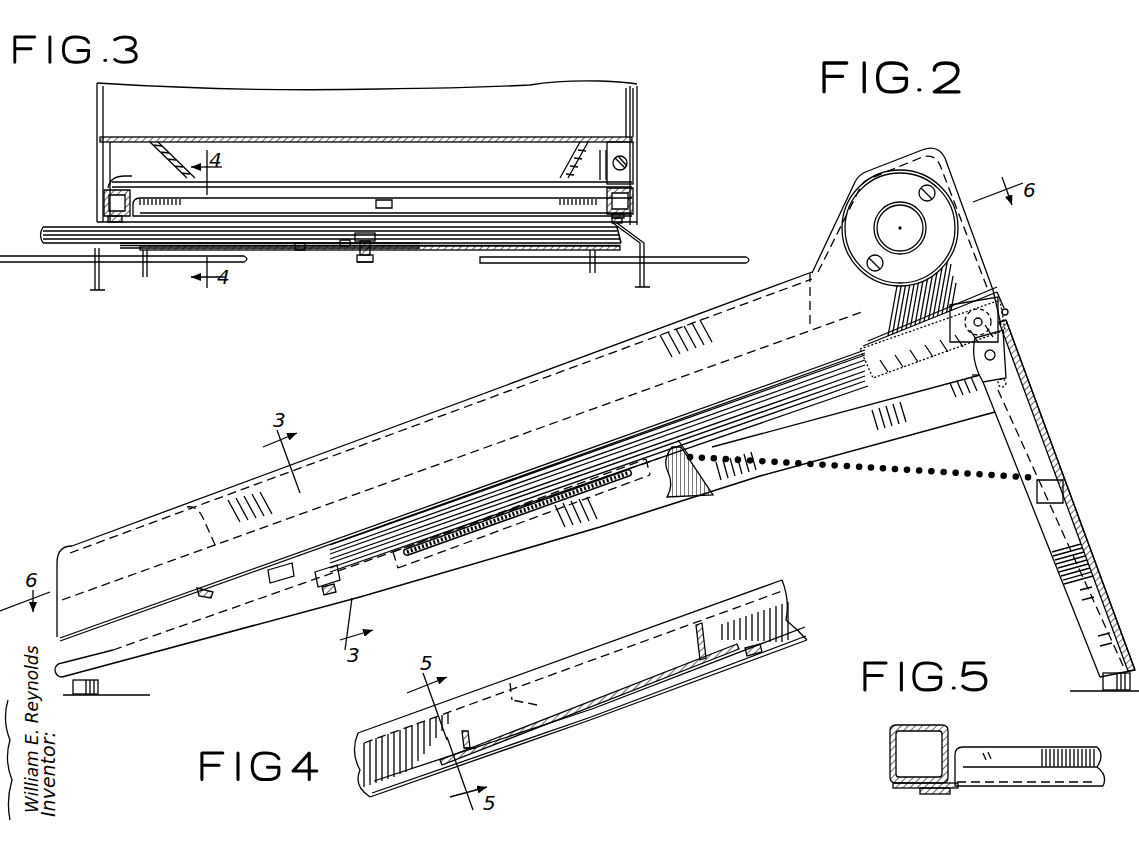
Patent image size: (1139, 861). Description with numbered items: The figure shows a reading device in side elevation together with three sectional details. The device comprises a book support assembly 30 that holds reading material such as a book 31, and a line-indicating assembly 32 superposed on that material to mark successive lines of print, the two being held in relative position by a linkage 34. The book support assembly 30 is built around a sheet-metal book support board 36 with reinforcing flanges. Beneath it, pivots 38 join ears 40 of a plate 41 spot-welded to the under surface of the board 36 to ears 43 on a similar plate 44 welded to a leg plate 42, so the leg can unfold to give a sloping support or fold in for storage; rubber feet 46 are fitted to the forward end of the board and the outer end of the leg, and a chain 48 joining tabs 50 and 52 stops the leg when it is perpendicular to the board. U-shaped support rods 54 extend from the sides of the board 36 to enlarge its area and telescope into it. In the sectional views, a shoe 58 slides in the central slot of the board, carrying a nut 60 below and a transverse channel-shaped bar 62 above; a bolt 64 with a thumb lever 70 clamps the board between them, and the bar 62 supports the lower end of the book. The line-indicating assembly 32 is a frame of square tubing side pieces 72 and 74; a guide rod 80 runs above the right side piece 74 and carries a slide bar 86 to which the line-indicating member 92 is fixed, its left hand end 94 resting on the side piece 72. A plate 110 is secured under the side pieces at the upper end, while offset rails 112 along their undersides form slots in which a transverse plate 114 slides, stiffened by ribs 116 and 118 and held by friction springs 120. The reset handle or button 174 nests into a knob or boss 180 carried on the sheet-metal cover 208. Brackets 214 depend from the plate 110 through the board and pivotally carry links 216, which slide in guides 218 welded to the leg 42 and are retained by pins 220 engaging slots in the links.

In FIG. 2, the book support assembly 30 is at (240, 648).
In FIG. 3, the book 31 is at (282, 237).
In FIG. 2, the book 31 is at (443, 482).
In FIG. 3, the line-indicating assembly 32 is at (93, 113).
In FIG. 2, the line-indicating assembly 32 is at (70, 533).
In FIG. 2, the linkage 34 is at (1010, 314).
In FIG. 3, the book support board 36 is at (455, 250).
In FIG. 2, the book support board 36 is at (545, 533).
In FIG. 2, the pivots 38 is at (1016, 340).
In FIG. 2, the ears 40 is at (853, 400).
In FIG. 2, the plate 41 is at (906, 361).
In FIG. 2, the leg plate 42 is at (1078, 522).
In FIG. 2, the ears 43 is at (1010, 437).
In FIG. 2, the plate 44 is at (1037, 423).
In FIG. 2, the rubber feet 46 is at (100, 688).
In FIG. 2, the chain 48 is at (928, 472).
In FIG. 2, the tab 50 is at (698, 482).
In FIG. 2, the tab 52 is at (1040, 487).
In FIG. 3, the U-shaped support rods 54 is at (48, 266).
In FIG. 2, the U-shaped support rods 54 is at (616, 490).
In FIG. 3, the shoe 58 is at (345, 246).
In FIG. 3, the nut 60 is at (358, 263).
In FIG. 3, the channel-shaped bar 62 is at (300, 250).
In FIG. 2, the channel-shaped bar 62 is at (320, 573).
In FIG. 3, the bolt 64 is at (370, 263).
In FIG. 3, the thumb lever 70 is at (382, 202).
In FIG. 2, the thumb lever 70 is at (277, 585).
In FIG. 3, the side piece 72 is at (104, 198).
In FIG. 4, the side piece 72 is at (640, 610).
In FIG. 5, the side piece 72 is at (890, 748).
In FIG. 3, the side piece 74 is at (637, 192).
In FIG. 2, the side piece 74 is at (473, 457).
In FIG. 3, the guide rod 80 is at (634, 160).
In FIG. 3, the slide bar 86 is at (627, 152).
In FIG. 3, the line-indicating member 92 is at (262, 174).
In FIG. 3, the left hand end 94 is at (126, 178).
In FIG. 2, the plate 110 is at (903, 324).
In FIG. 3, the offset tracks or rails 112 is at (106, 216).
In FIG. 2, the offset tracks or rails 112 is at (205, 590).
In FIG. 4, the offset tracks or rails 112 is at (750, 657).
In FIG. 5, the offset tracks or rails 112 is at (935, 790).
In FIG. 4, the transverse plate 114 is at (580, 694).
In FIG. 5, the transverse plate 114 is at (1103, 782).
In FIG. 3, the reinforcing flange or rib 116 is at (458, 212).
In FIG. 4, the reinforcing flange or rib 116 is at (507, 708).
In FIG. 5, the reinforcing flange or rib 116 is at (990, 772).
In FIG. 3, the reinforcing flange or rib 118 is at (340, 172).
In FIG. 4, the reinforcing flange or rib 118 is at (700, 627).
In FIG. 5, the reinforcing flange or rib 118 is at (1075, 730).
In FIG. 3, the springs 120 is at (626, 221).
In FIG. 4, the springs 120 is at (653, 695).
In FIG. 5, the springs 120 is at (955, 787).
In FIG. 2, the handle or button 174 is at (913, 237).
In FIG. 2, the knob or boss 180 is at (935, 257).
In FIG. 3, the sheet-metal cover 208 is at (612, 135).
In FIG. 2, the sheet-metal cover 208 is at (535, 390).
In FIG. 2, the ears or brackets 214 is at (1012, 306).
In FIG. 2, the links 216 is at (932, 365).
In FIG. 2, the chutes or guides 218 is at (1047, 513).
In FIG. 2, the pins 220 is at (1010, 385).